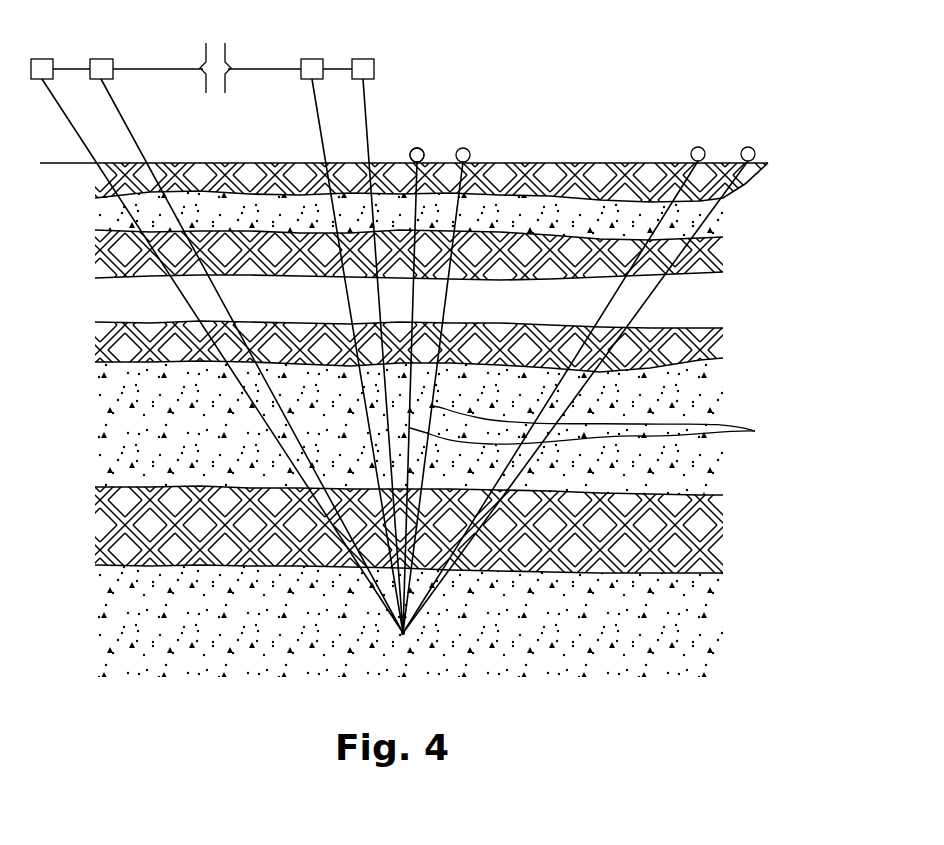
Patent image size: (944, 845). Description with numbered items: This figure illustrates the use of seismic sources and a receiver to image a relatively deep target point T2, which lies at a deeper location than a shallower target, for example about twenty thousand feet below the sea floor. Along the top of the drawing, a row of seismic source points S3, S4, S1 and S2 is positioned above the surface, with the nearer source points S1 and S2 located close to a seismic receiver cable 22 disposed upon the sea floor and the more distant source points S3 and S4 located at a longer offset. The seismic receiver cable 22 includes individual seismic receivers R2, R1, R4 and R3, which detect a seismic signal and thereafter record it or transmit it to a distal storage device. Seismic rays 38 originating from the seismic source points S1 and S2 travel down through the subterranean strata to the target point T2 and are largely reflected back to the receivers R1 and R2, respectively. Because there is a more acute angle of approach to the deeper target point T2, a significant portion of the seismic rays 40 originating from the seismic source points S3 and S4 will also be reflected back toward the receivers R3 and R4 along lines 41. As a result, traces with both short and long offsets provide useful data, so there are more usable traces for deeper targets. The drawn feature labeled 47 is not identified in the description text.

The seismic source point S1 is at (312, 59).
The seismic source point S2 is at (363, 59).
The seismic source point S3 is at (42, 59).
The seismic source point S4 is at (101, 59).
The receiver R1 is at (470, 151).
The receiver R2 is at (424, 151).
The receiver R3 is at (748, 147).
The receiver R4 is at (698, 147).
The seismic receiver cable 22 is at (413, 148).
The seismic rays 38 is at (365, 100).
The seismic rays 40 is at (82, 130).
The lines 41 is at (670, 225).
The subsurface reflector interface 47 is at (599, 427).
The target point T2 is at (403, 633).